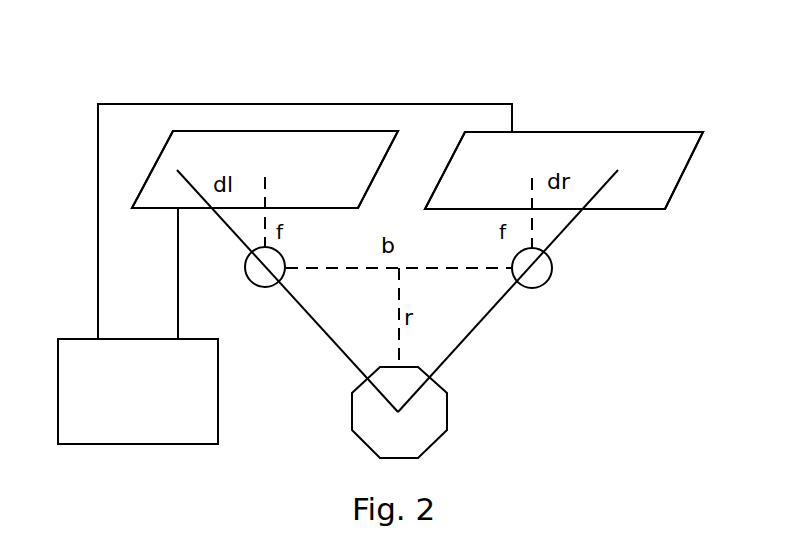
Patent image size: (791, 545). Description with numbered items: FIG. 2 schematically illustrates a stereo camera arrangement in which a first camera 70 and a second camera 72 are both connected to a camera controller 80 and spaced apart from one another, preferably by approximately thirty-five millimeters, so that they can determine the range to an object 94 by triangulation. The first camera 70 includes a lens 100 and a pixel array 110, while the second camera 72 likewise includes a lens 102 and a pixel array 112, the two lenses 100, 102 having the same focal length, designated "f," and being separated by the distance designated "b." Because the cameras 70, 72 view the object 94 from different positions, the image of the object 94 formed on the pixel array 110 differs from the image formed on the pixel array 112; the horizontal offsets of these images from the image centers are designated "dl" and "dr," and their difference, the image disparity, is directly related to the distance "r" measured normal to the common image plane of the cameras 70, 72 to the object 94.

The first camera 70 is at (192, 64).
The second camera 72 is at (550, 60).
The pixel array 110 is at (152, 167).
The pixel array 112 is at (565, 132).
The lens 100 is at (262, 286).
The lens 102 is at (538, 287).
The camera controller 80 is at (226, 382).
The object 94 is at (448, 392).